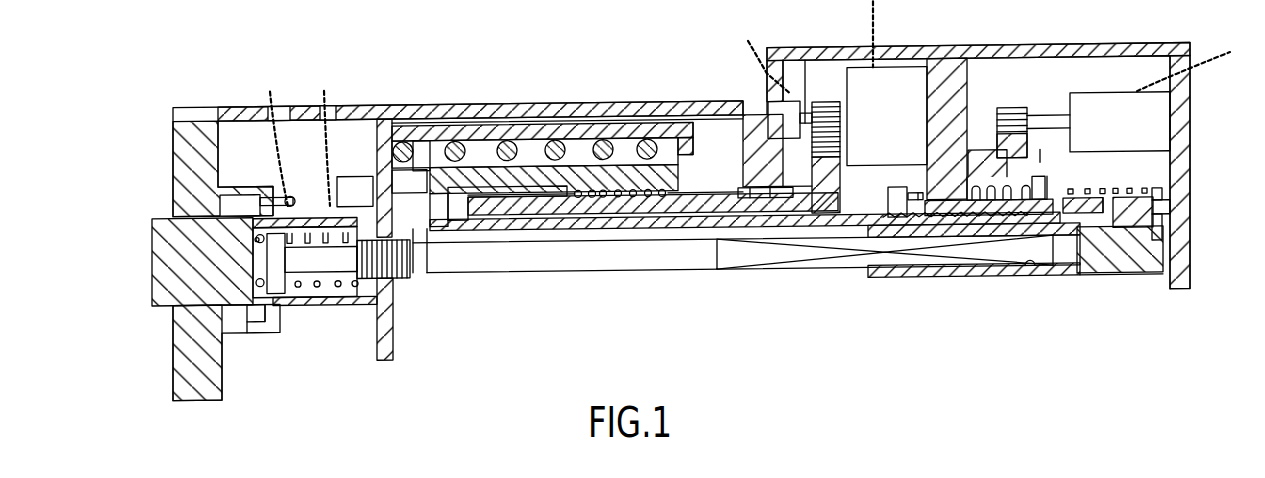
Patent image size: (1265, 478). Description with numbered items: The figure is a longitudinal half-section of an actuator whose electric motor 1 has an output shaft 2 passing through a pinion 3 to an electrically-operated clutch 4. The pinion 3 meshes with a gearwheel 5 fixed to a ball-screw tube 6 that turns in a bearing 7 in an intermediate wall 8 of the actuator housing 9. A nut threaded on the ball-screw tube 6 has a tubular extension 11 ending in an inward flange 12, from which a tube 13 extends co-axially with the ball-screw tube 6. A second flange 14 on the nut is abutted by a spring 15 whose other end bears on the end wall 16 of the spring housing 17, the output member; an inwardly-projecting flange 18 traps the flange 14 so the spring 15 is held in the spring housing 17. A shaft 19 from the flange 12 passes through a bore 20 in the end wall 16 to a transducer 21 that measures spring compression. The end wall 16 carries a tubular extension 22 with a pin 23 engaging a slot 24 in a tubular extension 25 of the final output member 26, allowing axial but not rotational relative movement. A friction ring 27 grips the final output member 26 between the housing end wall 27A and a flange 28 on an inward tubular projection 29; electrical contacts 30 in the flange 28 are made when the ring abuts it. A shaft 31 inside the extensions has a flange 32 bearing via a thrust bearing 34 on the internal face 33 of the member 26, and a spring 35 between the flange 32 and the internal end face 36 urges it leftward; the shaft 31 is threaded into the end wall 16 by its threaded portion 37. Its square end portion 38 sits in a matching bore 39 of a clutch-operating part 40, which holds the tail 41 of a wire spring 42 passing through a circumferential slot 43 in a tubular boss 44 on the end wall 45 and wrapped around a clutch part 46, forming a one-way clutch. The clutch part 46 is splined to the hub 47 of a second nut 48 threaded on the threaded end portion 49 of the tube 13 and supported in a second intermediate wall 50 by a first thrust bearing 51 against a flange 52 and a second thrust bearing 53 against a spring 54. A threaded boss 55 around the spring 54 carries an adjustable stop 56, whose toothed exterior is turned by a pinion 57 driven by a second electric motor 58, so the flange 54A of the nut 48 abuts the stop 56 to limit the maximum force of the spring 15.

The electric motor 1 is at (882, 94).
The output shaft 2 is at (806, 117).
The pinion 3 is at (833, 113).
The electrically-operated clutch 4 is at (782, 118).
The gearwheel 5 is at (824, 200).
The ball-screw tube 6 is at (602, 205).
The bearing 7 is at (760, 203).
The intermediate wall 8 is at (760, 156).
The actuator housing 9 is at (620, 104).
The tubular extension 11 is at (485, 172).
The flange 12 is at (438, 215).
The tube 13 is at (557, 231).
The second flange 14 is at (667, 147).
The spring 15 is at (556, 143).
The end wall 16 is at (367, 142).
The spring housing 17 is at (480, 124).
The inwardly-projecting flange 18 is at (697, 140).
The shaft 19 is at (417, 187).
The bore 20 is at (398, 190).
The transducer 21 is at (347, 192).
The tubular extension 22 is at (323, 296).
The pin 23 is at (330, 207).
The slot 24 is at (287, 197).
The tubular extension 25 is at (337, 287).
The final output member 26 is at (190, 266).
The friction ring 27 is at (252, 313).
The end wall 27A is at (190, 169).
The flange 28 is at (272, 313).
The tubular projection 29 is at (240, 328).
The electrical contacts 30 is at (267, 198).
The shaft 31 is at (507, 255).
The flange 32 is at (278, 271).
The internal face 33 is at (213, 302).
The thrust bearing 34 is at (255, 239).
The spring 35 is at (343, 287).
The internal end face 36 is at (363, 295).
The threaded portion 37 is at (370, 252).
The end portion 38 is at (1000, 254).
The bore 39 is at (1029, 273).
The clutch-operating part 40 is at (1125, 257).
The tail 41 is at (1163, 239).
The wire spring 42 is at (1145, 200).
The circumferential slot 43 is at (1170, 221).
The tubular boss 44 is at (1162, 202).
The end wall 45 is at (1178, 101).
The clutch part 46 is at (1073, 212).
The hub 47 is at (1087, 212).
The second nut 48 is at (934, 226).
The threaded end portion 49 is at (840, 257).
The second intermediate wall 50 is at (947, 92).
The first thrust bearing 51 is at (923, 203).
The flange 52 is at (888, 201).
The second thrust bearing 53 is at (1038, 165).
The spring 54 is at (967, 187).
The flange 54A is at (1057, 172).
The threaded boss 55 is at (976, 165).
The adjustable stop 56 is at (1012, 156).
The pinion 57 is at (1010, 118).
The second electric motor 58 is at (1100, 119).